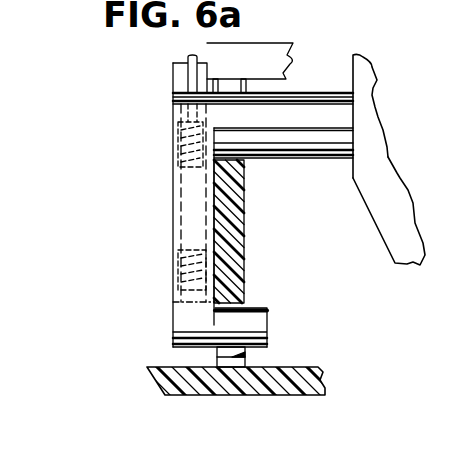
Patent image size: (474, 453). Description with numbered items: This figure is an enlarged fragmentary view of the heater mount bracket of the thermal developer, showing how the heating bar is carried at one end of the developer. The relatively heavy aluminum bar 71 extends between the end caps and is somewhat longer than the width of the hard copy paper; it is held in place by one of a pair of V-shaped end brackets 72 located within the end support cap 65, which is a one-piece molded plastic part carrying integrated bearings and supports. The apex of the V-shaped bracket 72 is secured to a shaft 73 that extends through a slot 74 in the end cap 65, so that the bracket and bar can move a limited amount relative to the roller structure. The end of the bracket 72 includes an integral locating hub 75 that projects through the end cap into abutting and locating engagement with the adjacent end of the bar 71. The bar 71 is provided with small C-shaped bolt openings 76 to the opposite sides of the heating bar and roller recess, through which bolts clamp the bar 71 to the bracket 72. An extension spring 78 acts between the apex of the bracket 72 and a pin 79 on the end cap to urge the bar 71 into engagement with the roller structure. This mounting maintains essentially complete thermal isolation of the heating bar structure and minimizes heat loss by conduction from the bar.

The end support cap 65 is at (245, 240).
The aluminum bar 71 is at (415, 220).
The end bracket 72 is at (175, 253).
The shaft 73 is at (252, 306).
The slot 74 is at (237, 354).
The locating hub 75 is at (327, 92).
The C-shaped bolt opening 76 is at (369, 106).
The extension spring 78 is at (185, 205).
The pin 79 is at (172, 80).